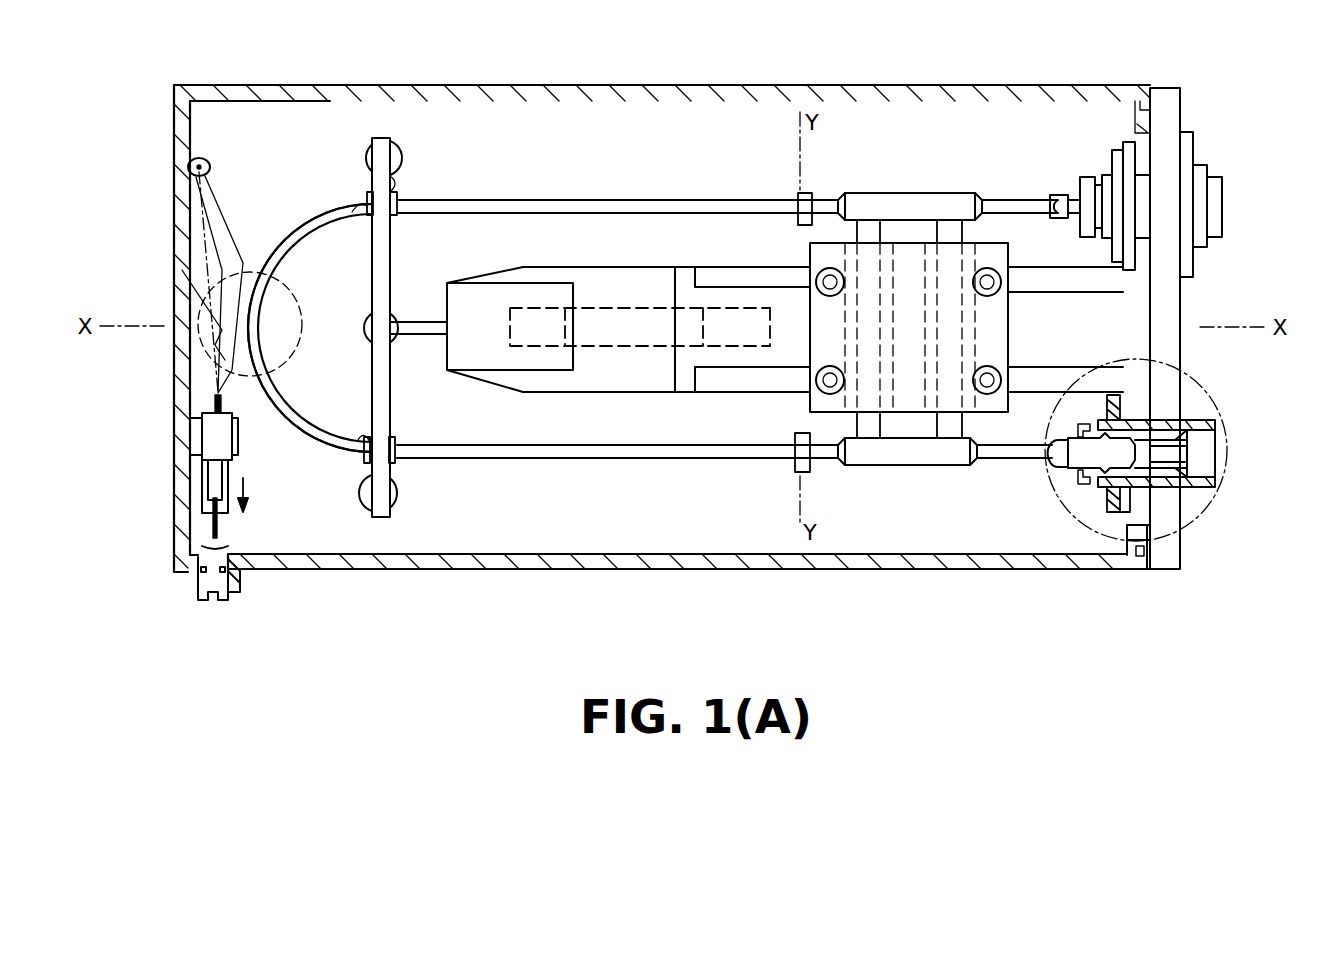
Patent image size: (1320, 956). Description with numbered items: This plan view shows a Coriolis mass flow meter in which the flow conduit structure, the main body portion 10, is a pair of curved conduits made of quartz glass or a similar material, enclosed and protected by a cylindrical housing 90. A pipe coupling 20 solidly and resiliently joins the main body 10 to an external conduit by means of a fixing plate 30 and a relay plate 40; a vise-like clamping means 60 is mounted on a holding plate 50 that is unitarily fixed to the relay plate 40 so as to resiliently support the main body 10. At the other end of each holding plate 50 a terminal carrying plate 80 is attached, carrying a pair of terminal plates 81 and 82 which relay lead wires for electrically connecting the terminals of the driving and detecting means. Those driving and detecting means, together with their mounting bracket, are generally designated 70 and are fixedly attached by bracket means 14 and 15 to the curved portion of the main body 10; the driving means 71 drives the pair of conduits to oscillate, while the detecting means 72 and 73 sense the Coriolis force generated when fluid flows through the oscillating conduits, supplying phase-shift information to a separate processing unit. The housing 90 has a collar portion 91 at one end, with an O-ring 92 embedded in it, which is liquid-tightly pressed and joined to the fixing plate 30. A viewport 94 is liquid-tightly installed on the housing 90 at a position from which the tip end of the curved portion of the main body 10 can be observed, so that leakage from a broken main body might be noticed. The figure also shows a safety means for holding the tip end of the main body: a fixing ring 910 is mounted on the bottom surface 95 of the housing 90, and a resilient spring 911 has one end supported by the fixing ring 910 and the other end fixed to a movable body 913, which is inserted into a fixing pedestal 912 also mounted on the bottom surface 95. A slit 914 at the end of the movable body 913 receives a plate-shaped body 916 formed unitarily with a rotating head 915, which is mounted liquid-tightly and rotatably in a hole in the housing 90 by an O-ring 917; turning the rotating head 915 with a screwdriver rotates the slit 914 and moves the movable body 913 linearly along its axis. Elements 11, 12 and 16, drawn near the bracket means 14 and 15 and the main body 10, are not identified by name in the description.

The main body portion 10 is at (610, 200).
The fixing member 11 is at (368, 196).
The fixing member 12 is at (360, 480).
The bracket means 14 is at (372, 366).
The bracket means 15 is at (310, 328).
The wire end 16 is at (361, 213).
The pipe coupling 20 is at (1227, 430).
The fixing plate 30 is at (1178, 297).
The relay plate 40 is at (1122, 328).
The holding plate 50 is at (743, 380).
The vise-like clamping means 60 is at (908, 243).
The driving and detecting means 70 is at (395, 184).
The driving means 71 is at (393, 312).
The detecting means 72 is at (396, 493).
The detecting means 73 is at (366, 148).
The terminal carrying plate 80 is at (640, 270).
The terminal plate 81 is at (543, 348).
The terminal plate 82 is at (720, 348).
The housing 90 is at (343, 85).
The collar portion 91 is at (1152, 537).
The O-ring 92 is at (1140, 557).
The viewport 94 is at (203, 300).
The bottom surface 95 is at (194, 110).
The fixing ring 910 is at (211, 165).
The resilient spring 911 is at (215, 198).
The fixing pedestal 912 is at (190, 437).
The movable body 913 is at (218, 440).
The slit 914 is at (212, 478).
The rotating head 915 is at (203, 600).
The plate-shaped body 916 is at (213, 532).
The O-ring 917 is at (238, 582).